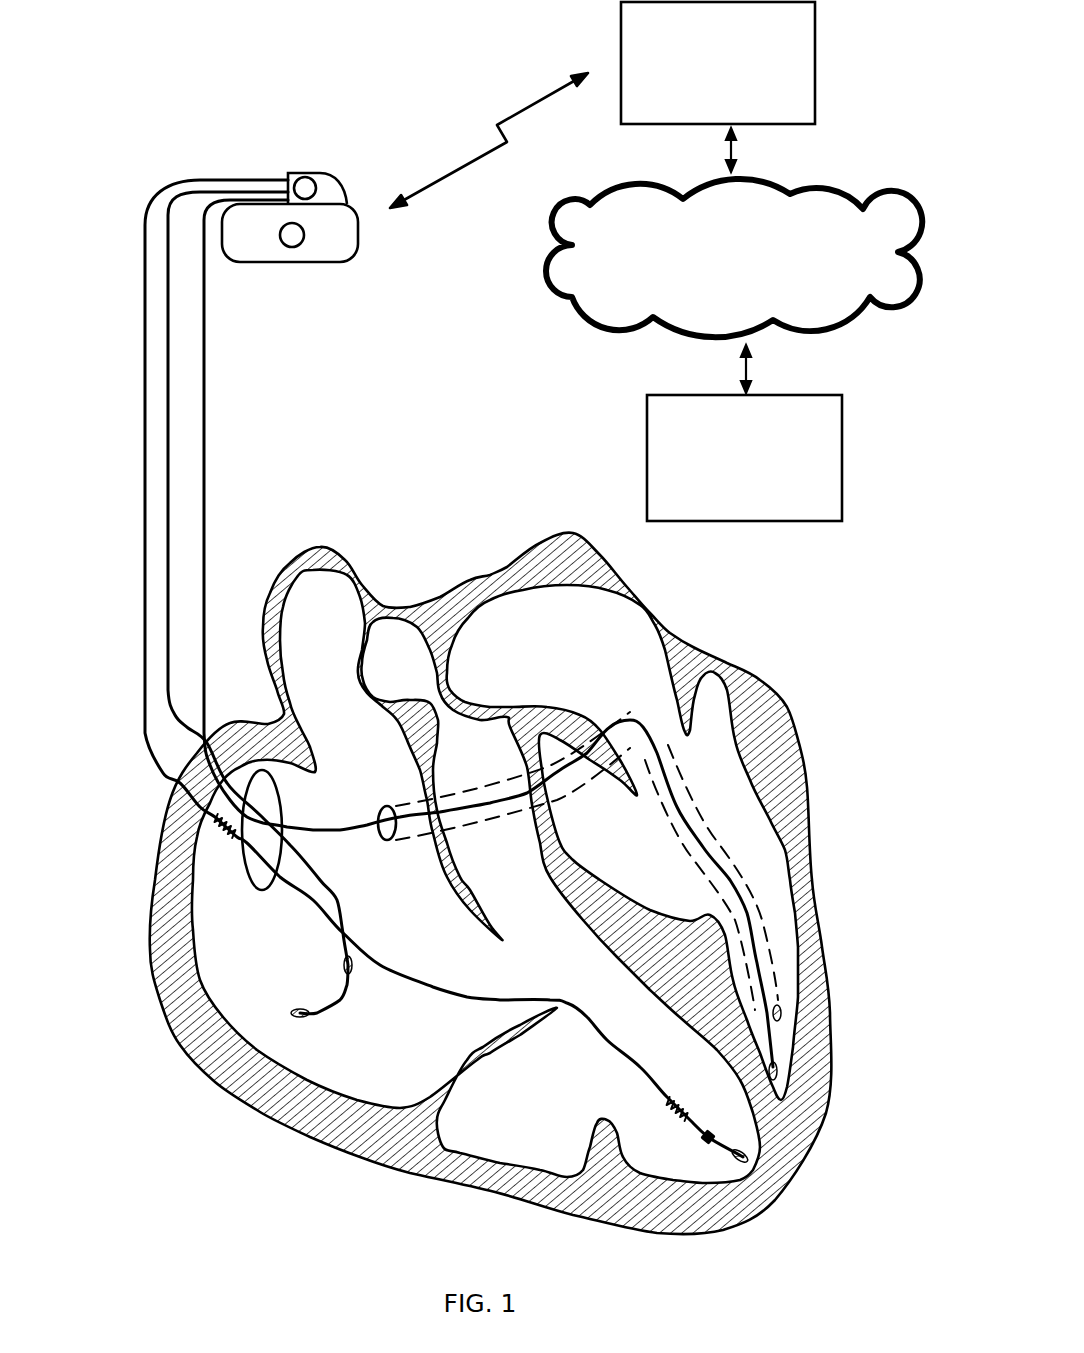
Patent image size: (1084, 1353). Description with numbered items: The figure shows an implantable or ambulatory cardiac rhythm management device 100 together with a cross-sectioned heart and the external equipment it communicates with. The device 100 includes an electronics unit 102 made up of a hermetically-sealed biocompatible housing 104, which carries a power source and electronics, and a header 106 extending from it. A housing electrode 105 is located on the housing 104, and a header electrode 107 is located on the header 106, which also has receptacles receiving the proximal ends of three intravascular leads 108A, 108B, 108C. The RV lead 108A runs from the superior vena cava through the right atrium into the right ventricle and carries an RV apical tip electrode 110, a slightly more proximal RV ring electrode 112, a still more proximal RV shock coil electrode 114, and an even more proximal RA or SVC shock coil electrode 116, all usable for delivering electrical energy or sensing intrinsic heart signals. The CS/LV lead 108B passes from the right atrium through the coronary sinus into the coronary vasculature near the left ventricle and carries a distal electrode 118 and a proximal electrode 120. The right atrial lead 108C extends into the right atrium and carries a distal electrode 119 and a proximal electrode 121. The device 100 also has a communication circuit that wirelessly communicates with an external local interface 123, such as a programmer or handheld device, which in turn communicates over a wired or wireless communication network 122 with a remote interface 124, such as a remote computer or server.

The cardiac rhythm management device 100 is at (170, 70).
The electronics unit 102 is at (250, 257).
The housing 104 is at (358, 189).
The housing electrode 105 is at (293, 242).
The header 106 is at (333, 173).
The header electrode 107 is at (305, 177).
The RV lead 108A is at (143, 210).
The CS/LV lead 108B is at (170, 367).
The right atrial lead 108C is at (206, 487).
The RV apical tip electrode 110 is at (737, 1157).
The RV ring electrode 112 is at (708, 1133).
The RV shock coil electrode 114 is at (663, 1103).
The RA or SVC shock coil electrode 116 is at (213, 843).
The distal electrode 118 is at (773, 1066).
The distal electrode 119 is at (297, 1017).
The proximal electrode 120 is at (776, 1012).
The proximal electrode 121 is at (350, 973).
The communication network 122 is at (847, 189).
The local interface 123 is at (815, 73).
The remote interface 124 is at (842, 420).